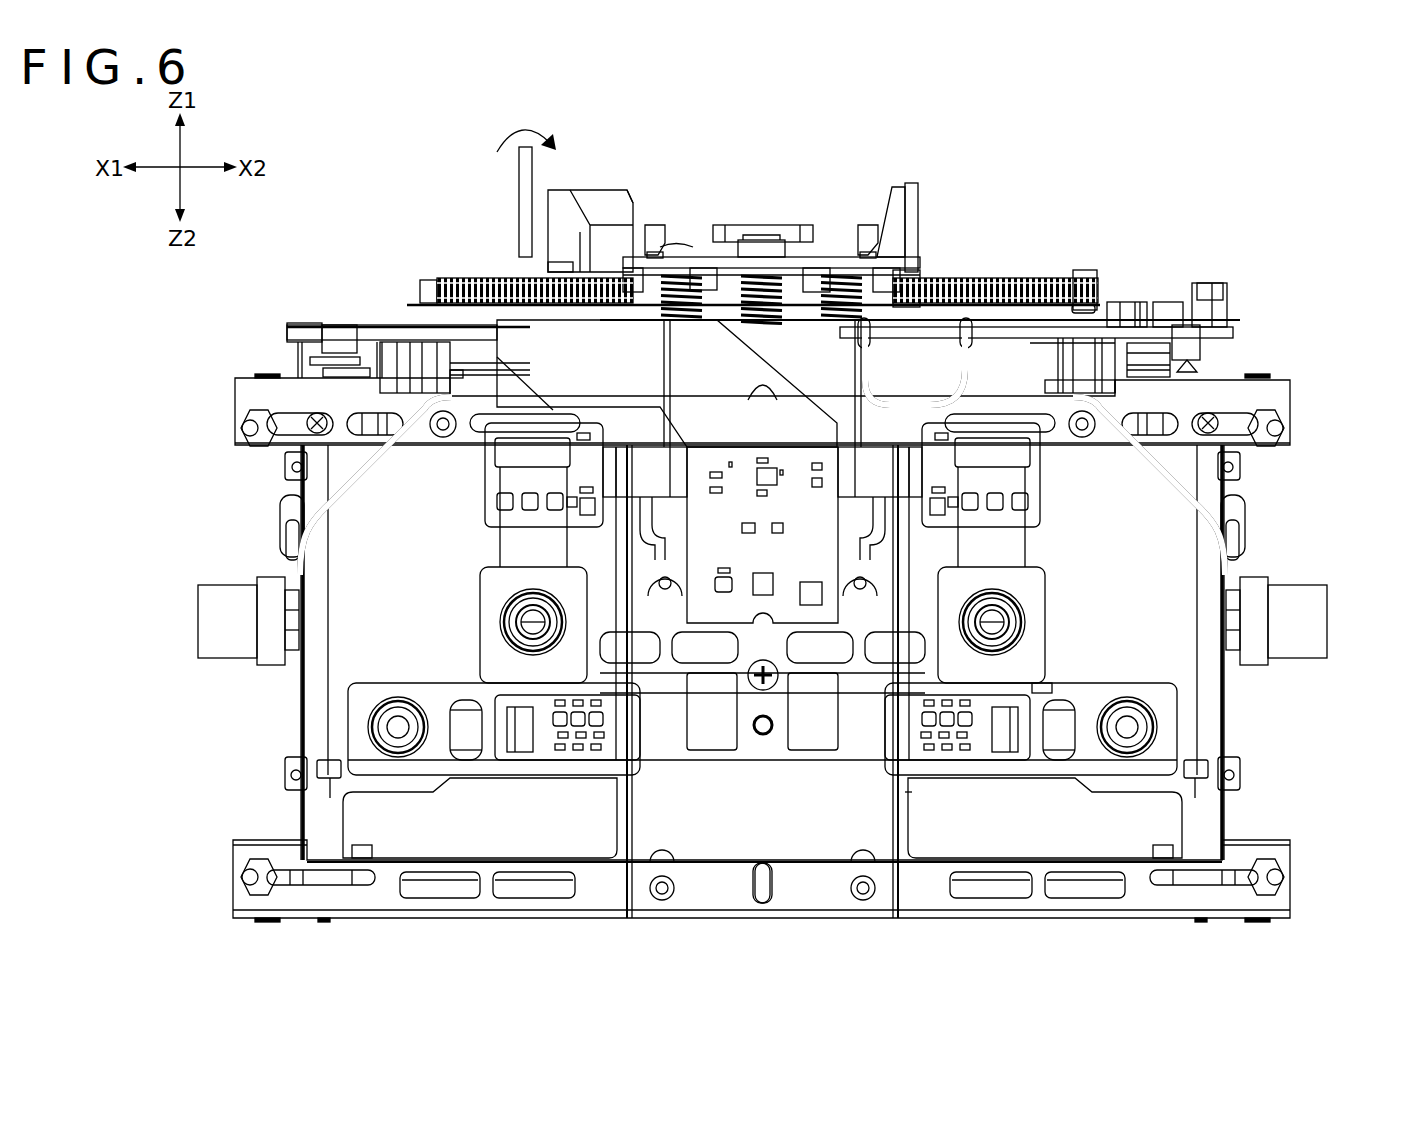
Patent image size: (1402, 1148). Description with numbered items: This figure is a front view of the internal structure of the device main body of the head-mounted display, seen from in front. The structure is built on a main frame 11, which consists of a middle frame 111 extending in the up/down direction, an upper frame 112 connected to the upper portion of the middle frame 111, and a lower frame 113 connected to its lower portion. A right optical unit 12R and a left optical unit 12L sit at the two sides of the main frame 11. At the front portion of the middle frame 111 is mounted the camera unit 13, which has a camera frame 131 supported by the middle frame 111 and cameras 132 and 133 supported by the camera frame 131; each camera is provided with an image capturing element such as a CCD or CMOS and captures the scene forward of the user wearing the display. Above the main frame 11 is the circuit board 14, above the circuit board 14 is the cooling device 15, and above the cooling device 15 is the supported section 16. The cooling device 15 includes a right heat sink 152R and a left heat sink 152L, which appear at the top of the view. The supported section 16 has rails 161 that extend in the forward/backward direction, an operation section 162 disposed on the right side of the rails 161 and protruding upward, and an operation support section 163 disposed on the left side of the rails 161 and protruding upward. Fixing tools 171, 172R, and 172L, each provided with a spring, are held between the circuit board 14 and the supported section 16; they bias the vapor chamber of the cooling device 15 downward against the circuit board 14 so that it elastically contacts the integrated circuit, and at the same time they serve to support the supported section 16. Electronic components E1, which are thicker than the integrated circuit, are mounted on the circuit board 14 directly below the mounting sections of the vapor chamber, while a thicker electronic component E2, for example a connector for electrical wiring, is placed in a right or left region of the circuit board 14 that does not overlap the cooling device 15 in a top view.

The main frame 11 is at (698, 845).
The middle frame 111 is at (878, 820).
The upper frame 112 is at (1280, 398).
The lower frame 113 is at (1173, 900).
The right optical unit 12R is at (298, 745).
The left optical unit 12L is at (1230, 745).
The camera unit 13 is at (1050, 565).
The camera frame 131 is at (1098, 695).
The camera 132 is at (512, 612).
The camera 133 is at (398, 725).
The circuit board 14 is at (1245, 330).
The cooling device 15 is at (1088, 268).
The right heat sink 152R is at (472, 303).
The left heat sink 152L is at (1002, 277).
The supported section 16 is at (598, 186).
The rails 161 is at (660, 228).
The operation section 162 is at (517, 177).
The operation support section 163 is at (908, 183).
The fixing tool 171 is at (785, 325).
The fixing tool 172R is at (657, 288).
The fixing tool 172L is at (870, 290).
The electronic component E1 is at (477, 318).
The electronic component E2 is at (1200, 283).